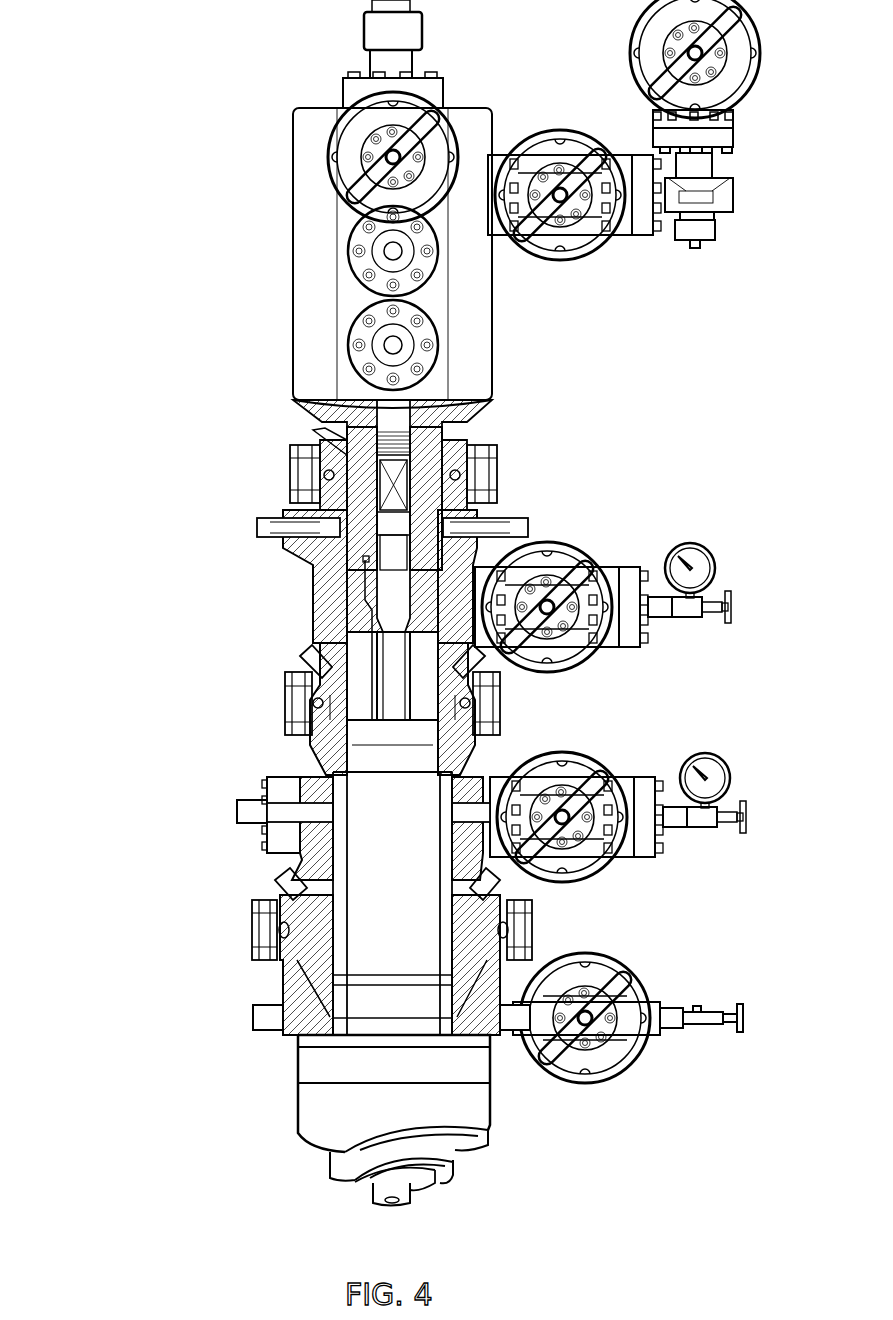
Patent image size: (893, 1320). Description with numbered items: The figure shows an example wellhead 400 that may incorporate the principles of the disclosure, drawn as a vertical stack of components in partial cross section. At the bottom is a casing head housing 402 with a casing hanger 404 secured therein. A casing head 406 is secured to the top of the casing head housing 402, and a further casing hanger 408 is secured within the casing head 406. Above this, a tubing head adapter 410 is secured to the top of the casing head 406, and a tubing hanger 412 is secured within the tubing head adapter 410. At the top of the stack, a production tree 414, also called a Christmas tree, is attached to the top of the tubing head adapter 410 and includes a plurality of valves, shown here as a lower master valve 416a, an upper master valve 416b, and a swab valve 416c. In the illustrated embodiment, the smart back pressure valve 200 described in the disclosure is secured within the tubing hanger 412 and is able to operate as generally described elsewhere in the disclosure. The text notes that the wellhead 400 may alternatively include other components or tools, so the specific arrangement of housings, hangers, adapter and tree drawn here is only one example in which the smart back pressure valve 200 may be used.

The wellhead 400 is at (118, 52).
The casing head housing 402 is at (288, 1046).
The casing hanger 404 is at (313, 967).
The casing head 406 is at (300, 770).
The casing hanger 408 is at (333, 733).
The tubing head adapter 410 is at (311, 564).
The tubing hanger 412 is at (347, 494).
The production tree 414 is at (288, 120).
The lower master valve 416a is at (377, 333).
The upper master valve 416b is at (377, 233).
The swab valve 416c is at (373, 143).
The smart back pressure valve 200 is at (416, 474).